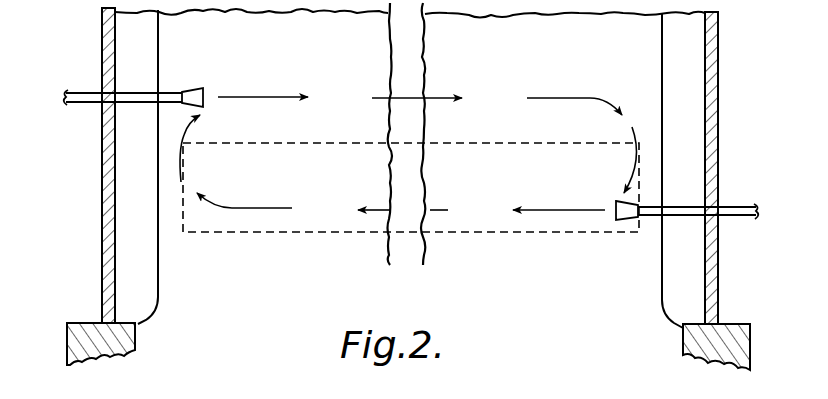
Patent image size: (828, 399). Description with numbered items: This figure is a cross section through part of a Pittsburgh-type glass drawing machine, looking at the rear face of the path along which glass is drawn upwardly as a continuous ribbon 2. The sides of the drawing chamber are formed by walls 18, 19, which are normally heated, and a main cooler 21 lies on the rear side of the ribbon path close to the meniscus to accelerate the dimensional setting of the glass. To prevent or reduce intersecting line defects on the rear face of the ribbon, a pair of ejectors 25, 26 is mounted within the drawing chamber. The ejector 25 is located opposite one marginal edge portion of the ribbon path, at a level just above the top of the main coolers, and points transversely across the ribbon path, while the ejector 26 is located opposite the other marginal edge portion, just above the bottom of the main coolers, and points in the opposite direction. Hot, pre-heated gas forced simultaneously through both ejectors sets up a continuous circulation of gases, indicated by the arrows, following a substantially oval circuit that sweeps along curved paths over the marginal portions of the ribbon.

The continuous ribbon 2 is at (478, 57).
The wall 18 is at (112, 70).
The wall 19 is at (710, 78).
The main cooler 21 is at (464, 213).
The ejector 25 is at (190, 90).
The ejector 26 is at (626, 212).